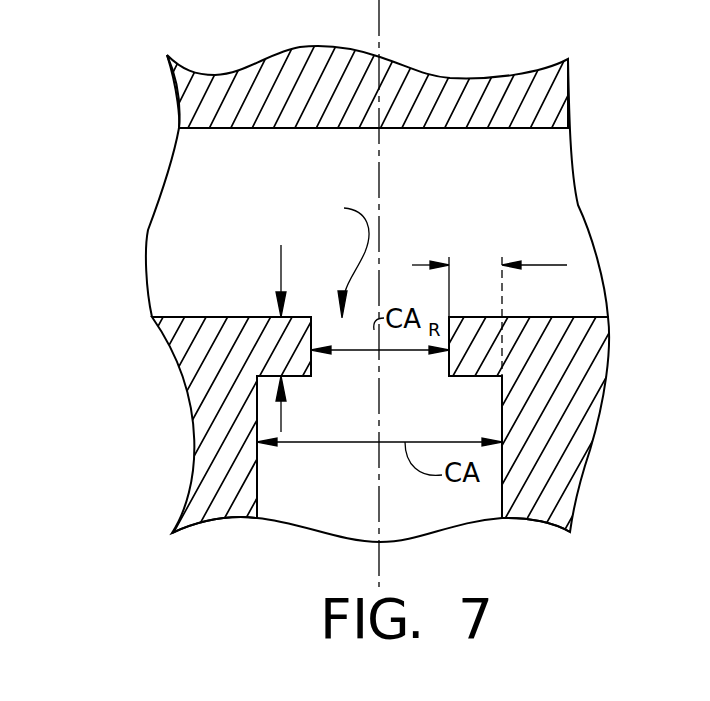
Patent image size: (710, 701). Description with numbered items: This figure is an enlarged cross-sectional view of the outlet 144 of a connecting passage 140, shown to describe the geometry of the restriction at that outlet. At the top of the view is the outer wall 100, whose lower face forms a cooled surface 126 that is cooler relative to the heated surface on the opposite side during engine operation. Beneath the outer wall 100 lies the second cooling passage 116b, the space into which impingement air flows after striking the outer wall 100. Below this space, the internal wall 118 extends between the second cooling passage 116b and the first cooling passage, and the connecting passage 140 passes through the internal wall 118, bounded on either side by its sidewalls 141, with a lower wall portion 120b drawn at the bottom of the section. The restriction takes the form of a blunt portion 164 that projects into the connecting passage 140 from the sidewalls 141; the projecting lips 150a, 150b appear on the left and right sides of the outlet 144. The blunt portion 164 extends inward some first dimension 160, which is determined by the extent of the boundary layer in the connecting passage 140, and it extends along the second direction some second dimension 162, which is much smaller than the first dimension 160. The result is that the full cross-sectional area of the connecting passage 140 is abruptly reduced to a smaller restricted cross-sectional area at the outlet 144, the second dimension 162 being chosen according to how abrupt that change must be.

The outer wall 100 is at (327, 98).
The second cooling passage 116b is at (247, 177).
The internal wall 118 is at (577, 428).
The second wall 120b is at (312, 512).
The cooled surface 126 is at (477, 128).
The connecting passage 140 is at (356, 418).
The sidewalls 141 is at (502, 497).
The outlet 144 is at (334, 255).
The first lip 150a is at (287, 347).
The second lip 150b is at (484, 345).
The first dimension 160 is at (548, 265).
The second dimension 162 is at (279, 263).
The blunt portion 164 is at (446, 372).